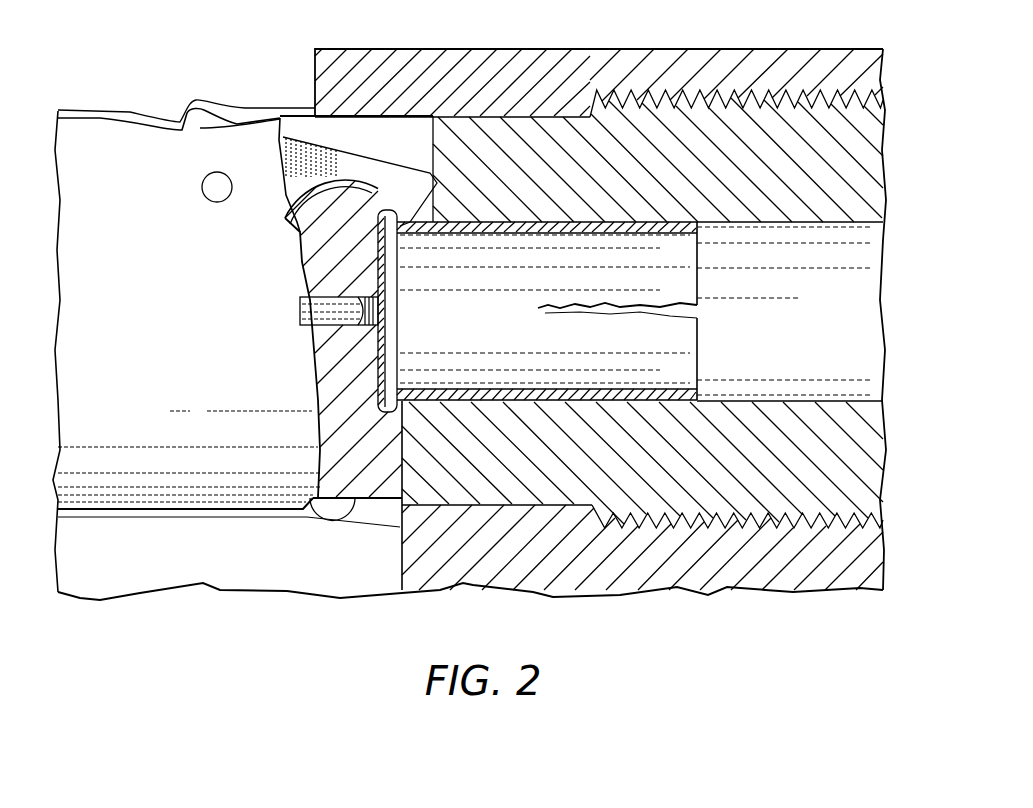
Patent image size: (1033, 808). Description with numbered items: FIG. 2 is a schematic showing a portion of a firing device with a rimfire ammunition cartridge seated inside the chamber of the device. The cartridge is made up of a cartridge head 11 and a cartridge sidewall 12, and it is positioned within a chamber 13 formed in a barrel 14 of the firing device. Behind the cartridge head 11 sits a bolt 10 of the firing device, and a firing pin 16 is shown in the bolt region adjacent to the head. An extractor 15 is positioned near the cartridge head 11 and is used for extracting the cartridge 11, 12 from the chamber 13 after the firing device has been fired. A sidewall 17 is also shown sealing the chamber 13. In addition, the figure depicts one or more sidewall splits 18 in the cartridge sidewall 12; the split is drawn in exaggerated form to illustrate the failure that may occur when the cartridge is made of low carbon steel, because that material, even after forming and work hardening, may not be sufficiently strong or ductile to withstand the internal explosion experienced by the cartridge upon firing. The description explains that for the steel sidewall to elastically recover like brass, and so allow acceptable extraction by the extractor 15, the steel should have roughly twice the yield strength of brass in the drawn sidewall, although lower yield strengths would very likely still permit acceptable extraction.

The bolt 10 is at (100, 140).
The cartridge head 11 is at (370, 362).
The cartridge sidewall 12 is at (685, 281).
The chamber 13 is at (870, 303).
The barrel 14 is at (878, 484).
The extractor 15 is at (355, 162).
The firing pin 16 is at (323, 307).
The sidewall 17 is at (667, 387).
The sidewall split 18 is at (667, 318).